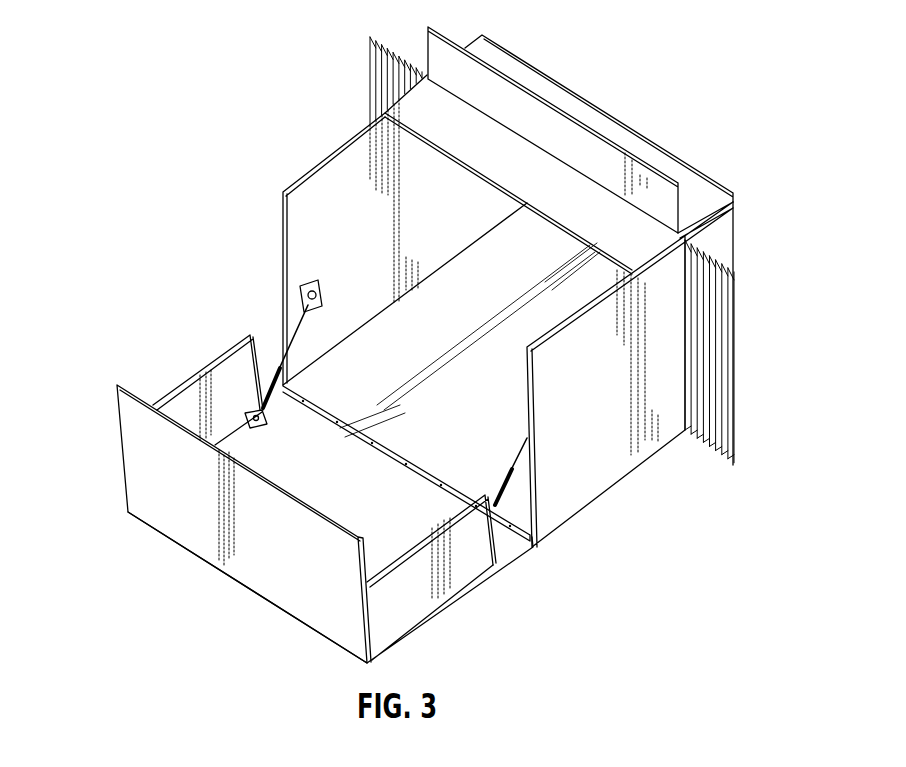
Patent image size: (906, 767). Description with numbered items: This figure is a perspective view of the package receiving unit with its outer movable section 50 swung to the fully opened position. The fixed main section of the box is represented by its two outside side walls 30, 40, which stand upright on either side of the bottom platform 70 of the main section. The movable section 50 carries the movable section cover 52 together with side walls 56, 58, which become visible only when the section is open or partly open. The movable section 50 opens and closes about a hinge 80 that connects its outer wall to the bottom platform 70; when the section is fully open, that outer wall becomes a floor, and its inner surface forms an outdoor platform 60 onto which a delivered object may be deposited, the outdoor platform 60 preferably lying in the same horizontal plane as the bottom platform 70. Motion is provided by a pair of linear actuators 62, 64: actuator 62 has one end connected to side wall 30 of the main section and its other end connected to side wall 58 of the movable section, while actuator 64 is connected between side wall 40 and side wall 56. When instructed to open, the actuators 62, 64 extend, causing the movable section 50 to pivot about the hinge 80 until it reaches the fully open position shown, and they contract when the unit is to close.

The outside side wall 30 is at (348, 160).
The outside side wall 40 is at (615, 468).
The movable section 50 is at (117, 443).
The movable section cover 52 is at (157, 520).
The side wall 56 is at (478, 560).
The side wall 58 is at (172, 405).
The outdoor platform 60 is at (377, 497).
The linear actuator 62 is at (283, 365).
The linear actuator 64 is at (497, 483).
The bottom platform 70 is at (395, 333).
The hinge 80 is at (445, 473).